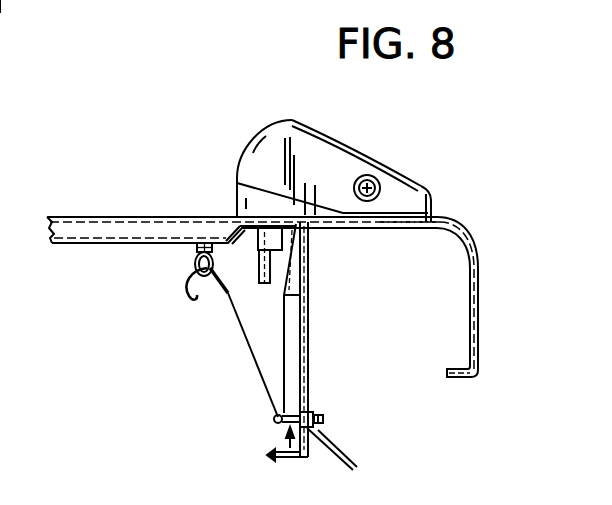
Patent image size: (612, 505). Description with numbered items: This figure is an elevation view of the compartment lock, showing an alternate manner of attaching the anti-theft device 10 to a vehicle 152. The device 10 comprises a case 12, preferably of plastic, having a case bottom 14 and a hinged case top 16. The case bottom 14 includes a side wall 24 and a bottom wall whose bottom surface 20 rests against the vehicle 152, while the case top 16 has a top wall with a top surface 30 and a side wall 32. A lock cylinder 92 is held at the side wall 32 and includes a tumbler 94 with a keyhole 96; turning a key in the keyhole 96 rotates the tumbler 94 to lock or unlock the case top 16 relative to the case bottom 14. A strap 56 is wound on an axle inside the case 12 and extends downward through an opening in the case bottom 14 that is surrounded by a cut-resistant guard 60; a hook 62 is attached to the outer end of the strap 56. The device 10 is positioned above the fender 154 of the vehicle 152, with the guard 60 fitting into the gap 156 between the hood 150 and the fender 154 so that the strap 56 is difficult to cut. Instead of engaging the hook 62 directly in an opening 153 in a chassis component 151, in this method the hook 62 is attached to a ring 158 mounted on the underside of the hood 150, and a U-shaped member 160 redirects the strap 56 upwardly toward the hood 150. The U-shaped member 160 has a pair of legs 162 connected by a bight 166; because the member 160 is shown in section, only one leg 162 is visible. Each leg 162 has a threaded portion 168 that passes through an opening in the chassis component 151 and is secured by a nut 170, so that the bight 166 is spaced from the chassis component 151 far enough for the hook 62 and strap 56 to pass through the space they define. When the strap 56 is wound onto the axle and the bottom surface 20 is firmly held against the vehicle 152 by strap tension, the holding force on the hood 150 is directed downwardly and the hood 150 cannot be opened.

The anti-theft device 10 is at (324, 151).
The case 12 is at (236, 156).
The case bottom 14 is at (233, 200).
The case top 16 is at (344, 139).
The bottom surface 20 is at (385, 228).
The side wall 24 is at (412, 228).
The top surface 30 is at (415, 185).
The side wall 32 is at (313, 158).
The strap 56 is at (245, 350).
The guard 60 is at (305, 228).
The hook 62 is at (188, 300).
The lock cylinder 92 is at (432, 206).
The tumbler 94 is at (371, 181).
The keyhole 96 is at (381, 181).
The hood 150 is at (78, 211).
The chassis component 151 is at (307, 363).
The vehicle 152 is at (103, 181).
The opening 153 is at (0, 38).
The fender 154 is at (476, 305).
The gap 156 is at (308, 262).
The ring 158 is at (188, 266).
The U-shaped member 160 is at (289, 462).
The leg 162 is at (300, 398).
The bight 166 is at (274, 419).
The threaded portion 168 is at (323, 420).
The nut 170 is at (348, 459).